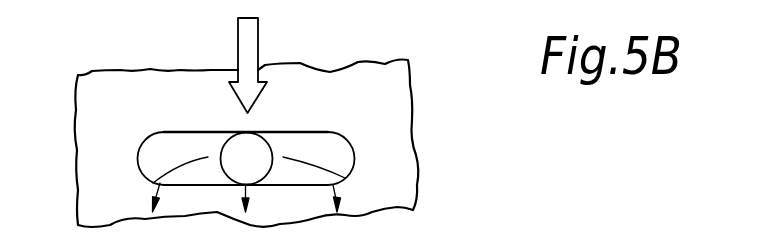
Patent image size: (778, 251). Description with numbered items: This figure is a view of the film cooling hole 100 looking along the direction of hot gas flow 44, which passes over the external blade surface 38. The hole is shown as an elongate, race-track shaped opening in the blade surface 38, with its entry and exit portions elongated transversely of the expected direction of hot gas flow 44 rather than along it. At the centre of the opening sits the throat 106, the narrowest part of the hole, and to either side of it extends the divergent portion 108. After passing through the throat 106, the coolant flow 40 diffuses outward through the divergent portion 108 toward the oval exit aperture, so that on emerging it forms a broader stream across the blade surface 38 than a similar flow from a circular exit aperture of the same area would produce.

The blade surface 38 is at (421, 173).
The coolant flow 40 is at (153, 183).
The direction of hot gas flow 44 is at (247, 47).
The film cooling hole 100 is at (337, 118).
The throat 106 is at (217, 132).
The divergent portion 108 is at (160, 147).